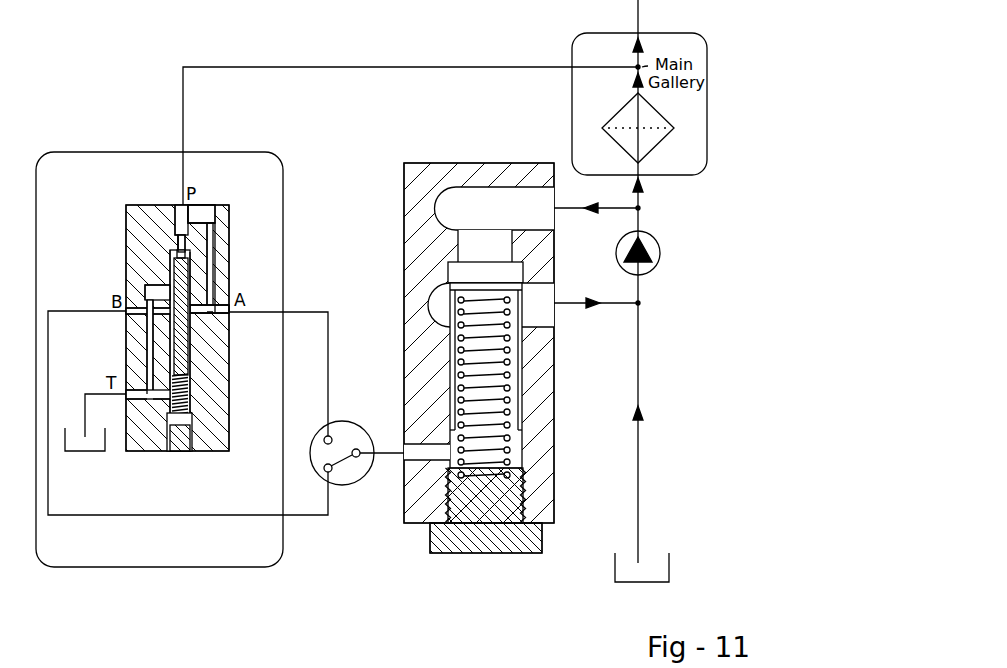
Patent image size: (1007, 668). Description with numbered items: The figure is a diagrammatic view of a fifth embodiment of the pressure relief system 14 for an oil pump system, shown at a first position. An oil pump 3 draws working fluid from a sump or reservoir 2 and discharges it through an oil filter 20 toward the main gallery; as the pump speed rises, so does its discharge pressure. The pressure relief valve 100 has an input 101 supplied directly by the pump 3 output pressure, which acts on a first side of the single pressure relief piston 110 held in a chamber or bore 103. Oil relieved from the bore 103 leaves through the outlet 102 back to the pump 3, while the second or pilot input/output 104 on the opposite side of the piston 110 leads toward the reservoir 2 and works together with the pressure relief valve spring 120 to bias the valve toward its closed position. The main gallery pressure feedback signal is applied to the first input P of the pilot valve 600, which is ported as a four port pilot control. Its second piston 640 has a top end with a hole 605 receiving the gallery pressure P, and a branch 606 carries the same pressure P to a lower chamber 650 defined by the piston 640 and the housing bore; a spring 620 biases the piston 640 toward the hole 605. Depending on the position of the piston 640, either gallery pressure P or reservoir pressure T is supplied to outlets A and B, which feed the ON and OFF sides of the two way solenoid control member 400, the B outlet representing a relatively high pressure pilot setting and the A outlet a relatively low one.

The sump or reservoir 2 is at (95, 455).
The oil pump 3 is at (657, 242).
The pressure relief system 14 is at (380, 125).
The oil filter 20 is at (612, 122).
The pressure relief valve 100 is at (456, 162).
The input 101 is at (562, 210).
The outlet 102 is at (562, 305).
The chamber or bore 103 is at (492, 257).
The pilot input/output 104 is at (386, 445).
The pressure relief piston 110 is at (524, 370).
The pressure relief valve spring 120 is at (512, 455).
The solenoid control member 400 is at (356, 485).
The pilot valve 600 is at (150, 453).
The hole 605 is at (178, 245).
The branch 606 is at (203, 237).
The spring 620 is at (192, 420).
The second piston 640 is at (195, 265).
The lower chamber 650 is at (197, 345).